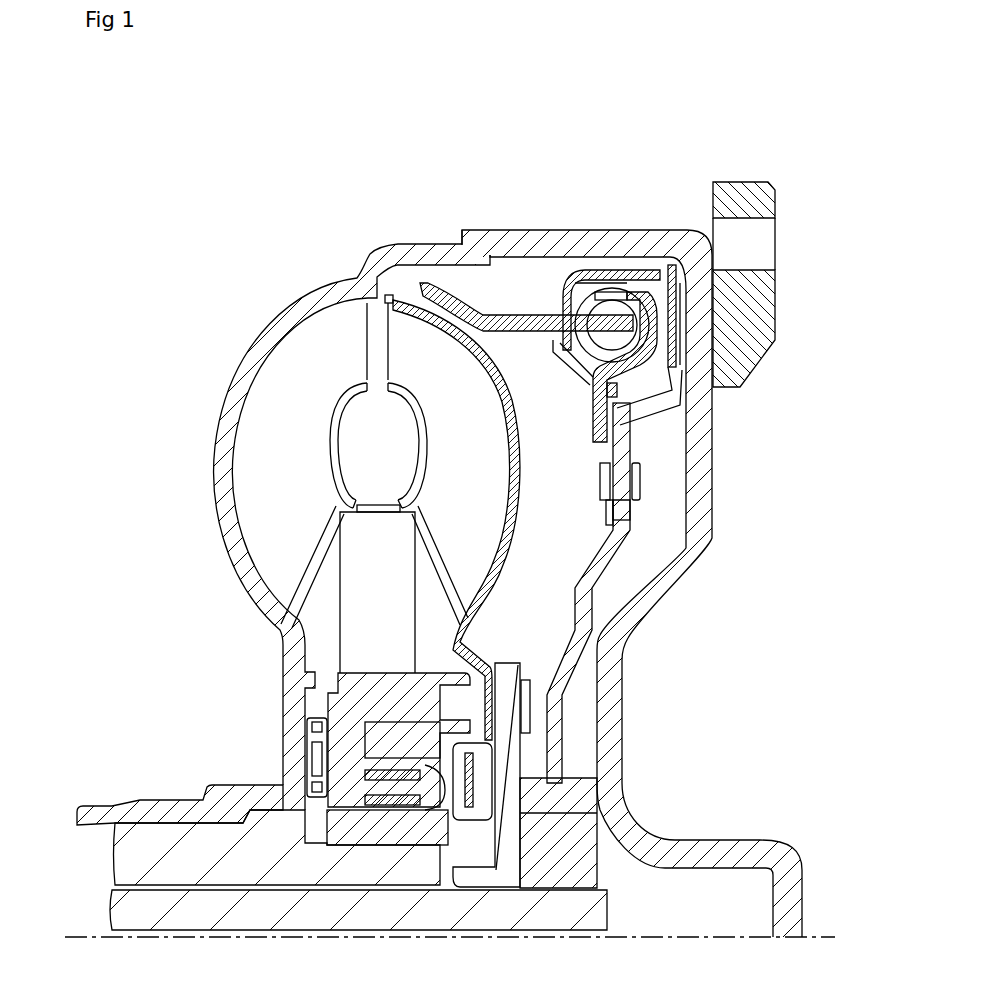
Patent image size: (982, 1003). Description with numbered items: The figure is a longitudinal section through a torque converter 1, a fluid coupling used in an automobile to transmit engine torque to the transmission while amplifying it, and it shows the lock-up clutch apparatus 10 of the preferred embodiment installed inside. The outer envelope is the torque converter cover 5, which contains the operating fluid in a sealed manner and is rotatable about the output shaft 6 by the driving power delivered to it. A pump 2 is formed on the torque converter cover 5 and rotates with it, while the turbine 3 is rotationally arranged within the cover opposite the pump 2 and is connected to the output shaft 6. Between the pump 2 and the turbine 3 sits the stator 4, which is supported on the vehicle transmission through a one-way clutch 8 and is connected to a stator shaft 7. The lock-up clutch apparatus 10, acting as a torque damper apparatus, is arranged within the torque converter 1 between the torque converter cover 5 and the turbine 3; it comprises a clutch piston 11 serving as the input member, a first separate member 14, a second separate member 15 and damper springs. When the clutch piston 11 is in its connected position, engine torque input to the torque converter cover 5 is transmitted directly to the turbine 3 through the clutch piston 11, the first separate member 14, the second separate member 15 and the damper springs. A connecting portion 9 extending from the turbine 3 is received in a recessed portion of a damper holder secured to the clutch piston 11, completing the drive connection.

The torque converter 1 is at (200, 335).
The pump 2 is at (258, 442).
The turbine 3 is at (407, 333).
The stator 4 is at (350, 577).
The torque converter cover 5 is at (620, 237).
The output shaft 6 is at (128, 916).
The stator shaft 7 is at (132, 848).
The one-way clutch 8 is at (302, 748).
The connecting portion 9 is at (523, 314).
The lock-up clutch apparatus 10 is at (638, 440).
The clutch piston 11 is at (623, 520).
The first separate member 14 is at (577, 277).
The second separate member 15 is at (690, 425).